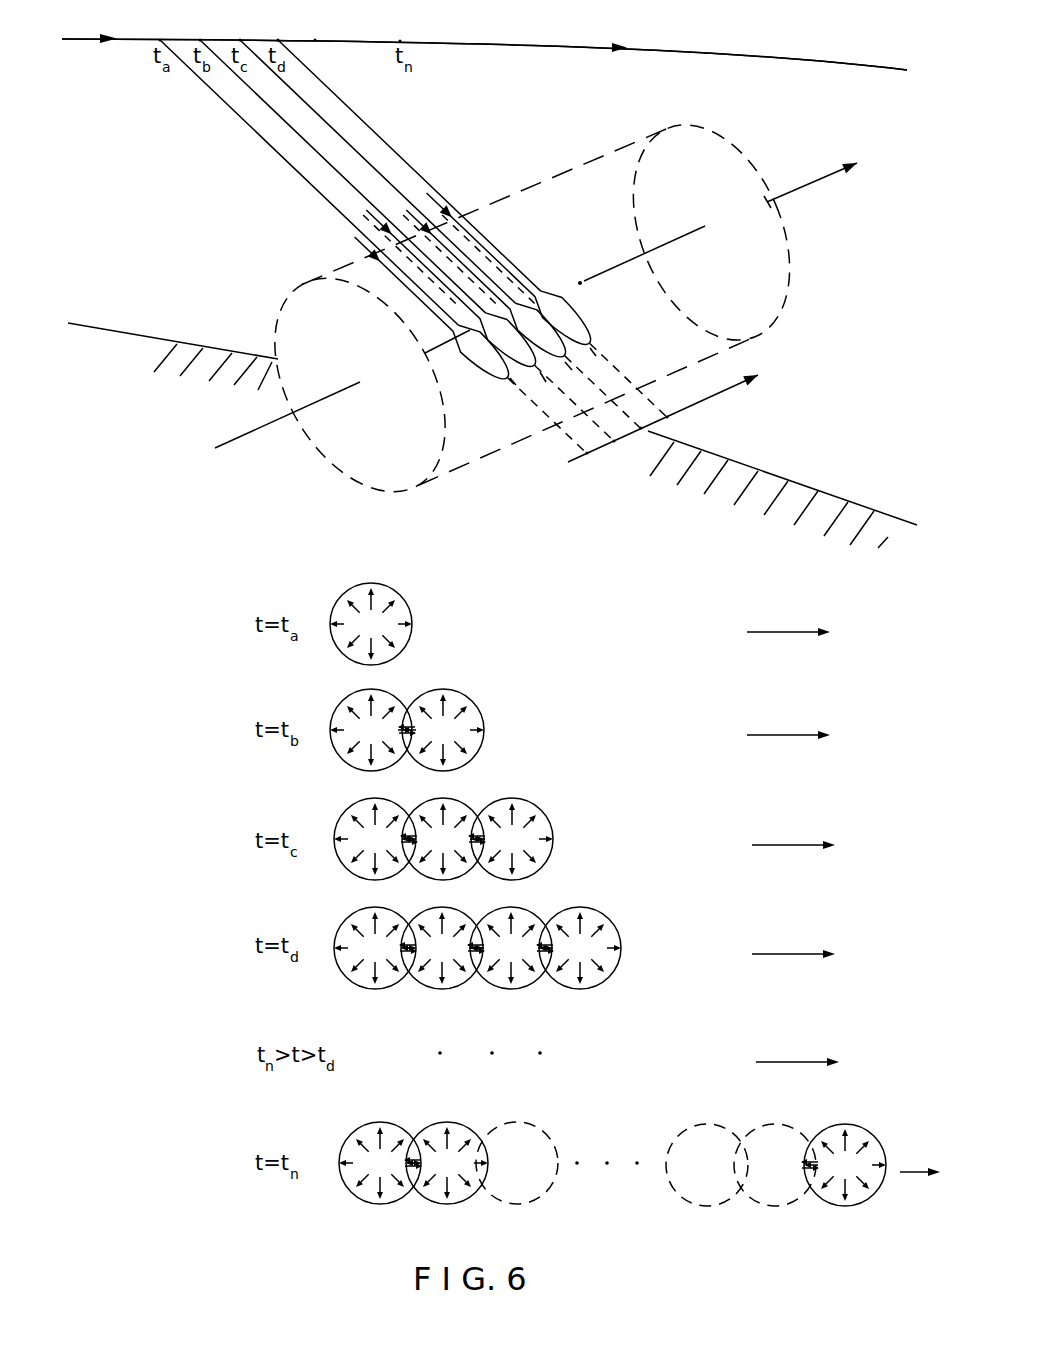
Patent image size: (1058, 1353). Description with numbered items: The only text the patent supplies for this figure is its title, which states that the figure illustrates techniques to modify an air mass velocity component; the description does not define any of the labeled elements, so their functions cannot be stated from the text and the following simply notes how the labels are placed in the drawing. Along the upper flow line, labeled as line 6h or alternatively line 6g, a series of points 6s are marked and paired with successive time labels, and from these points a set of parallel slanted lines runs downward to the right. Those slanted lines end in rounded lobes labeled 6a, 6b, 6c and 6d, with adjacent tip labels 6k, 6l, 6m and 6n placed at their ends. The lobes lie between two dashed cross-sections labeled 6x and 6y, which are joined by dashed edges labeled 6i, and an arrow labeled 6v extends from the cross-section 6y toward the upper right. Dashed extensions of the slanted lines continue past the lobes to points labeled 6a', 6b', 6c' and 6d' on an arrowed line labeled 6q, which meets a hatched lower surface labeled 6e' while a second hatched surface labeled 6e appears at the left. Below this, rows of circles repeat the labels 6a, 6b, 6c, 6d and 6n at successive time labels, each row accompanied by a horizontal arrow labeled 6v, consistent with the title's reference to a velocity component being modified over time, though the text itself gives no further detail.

The sampling points on flow line 6s is at (279, 28).
The flow line 6h is at (484, 51).
The flow line 6g is at (484, 52).
The cylindrical volume 6i is at (529, 307).
The velocity vector 6v is at (843, 655).
The end cross-section 6y is at (699, 232).
The start cross-section 6x is at (347, 385).
The surface 6e is at (173, 356).
The surface 6e' is at (782, 489).
The reflected line 6q is at (663, 418).
The first beam pulse 6a is at (373, 622).
The second beam pulse 6b is at (407, 622).
The third beam pulse 6c is at (440, 622).
The fourth beam pulse 6d is at (472, 514).
The beam tip 6k is at (499, 390).
The beam tip 6l is at (536, 383).
The beam tip 6m is at (572, 373).
The nth beam pulse 6n is at (734, 776).
The first beam impact point 6a' is at (594, 468).
The second beam impact point 6b' is at (629, 454).
The third beam impact point 6c' is at (652, 416).
The fourth beam impact point 6d' is at (688, 425).